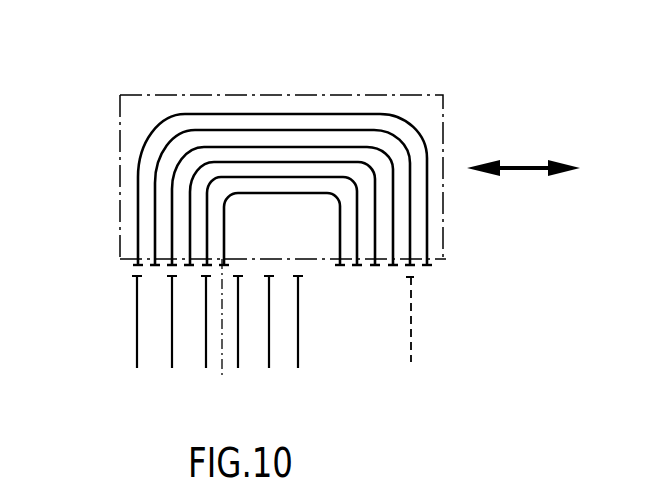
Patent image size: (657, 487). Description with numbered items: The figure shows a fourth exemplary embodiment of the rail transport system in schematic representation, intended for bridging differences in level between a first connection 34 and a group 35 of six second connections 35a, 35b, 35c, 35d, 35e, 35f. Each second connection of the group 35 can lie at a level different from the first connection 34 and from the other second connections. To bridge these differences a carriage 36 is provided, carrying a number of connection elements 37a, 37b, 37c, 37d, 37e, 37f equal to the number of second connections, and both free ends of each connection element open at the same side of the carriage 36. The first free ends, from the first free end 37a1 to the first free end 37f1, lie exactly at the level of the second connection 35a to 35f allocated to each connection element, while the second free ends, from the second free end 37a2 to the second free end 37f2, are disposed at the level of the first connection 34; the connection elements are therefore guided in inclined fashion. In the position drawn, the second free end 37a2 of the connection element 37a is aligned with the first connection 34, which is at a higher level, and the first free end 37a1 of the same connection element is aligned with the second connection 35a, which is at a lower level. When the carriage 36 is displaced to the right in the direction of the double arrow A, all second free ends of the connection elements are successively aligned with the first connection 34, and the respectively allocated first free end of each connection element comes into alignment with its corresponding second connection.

The first connection 34 is at (411, 360).
The group of second connections 35 is at (197, 340).
The second connection 35a is at (137, 300).
The second connection 35b is at (172, 322).
The second connection 35c is at (207, 338).
The second connection 35d is at (238, 340).
The second connection 35e is at (269, 353).
The second connection 35f is at (321, 329).
The carriage 36 is at (419, 107).
The connection element 37a is at (138, 178).
The connection element 37b is at (157, 165).
The connection element 37c is at (180, 165).
The connection element 37d is at (190, 172).
The connection element 37e is at (223, 192).
The connection element 37f is at (190, 176).
The first free end 37a1 is at (138, 265).
The second free end 37a2 is at (428, 265).
The first free end 37f1 is at (225, 264).
The second free end 37f2 is at (342, 263).
The double arrow A is at (523, 158).